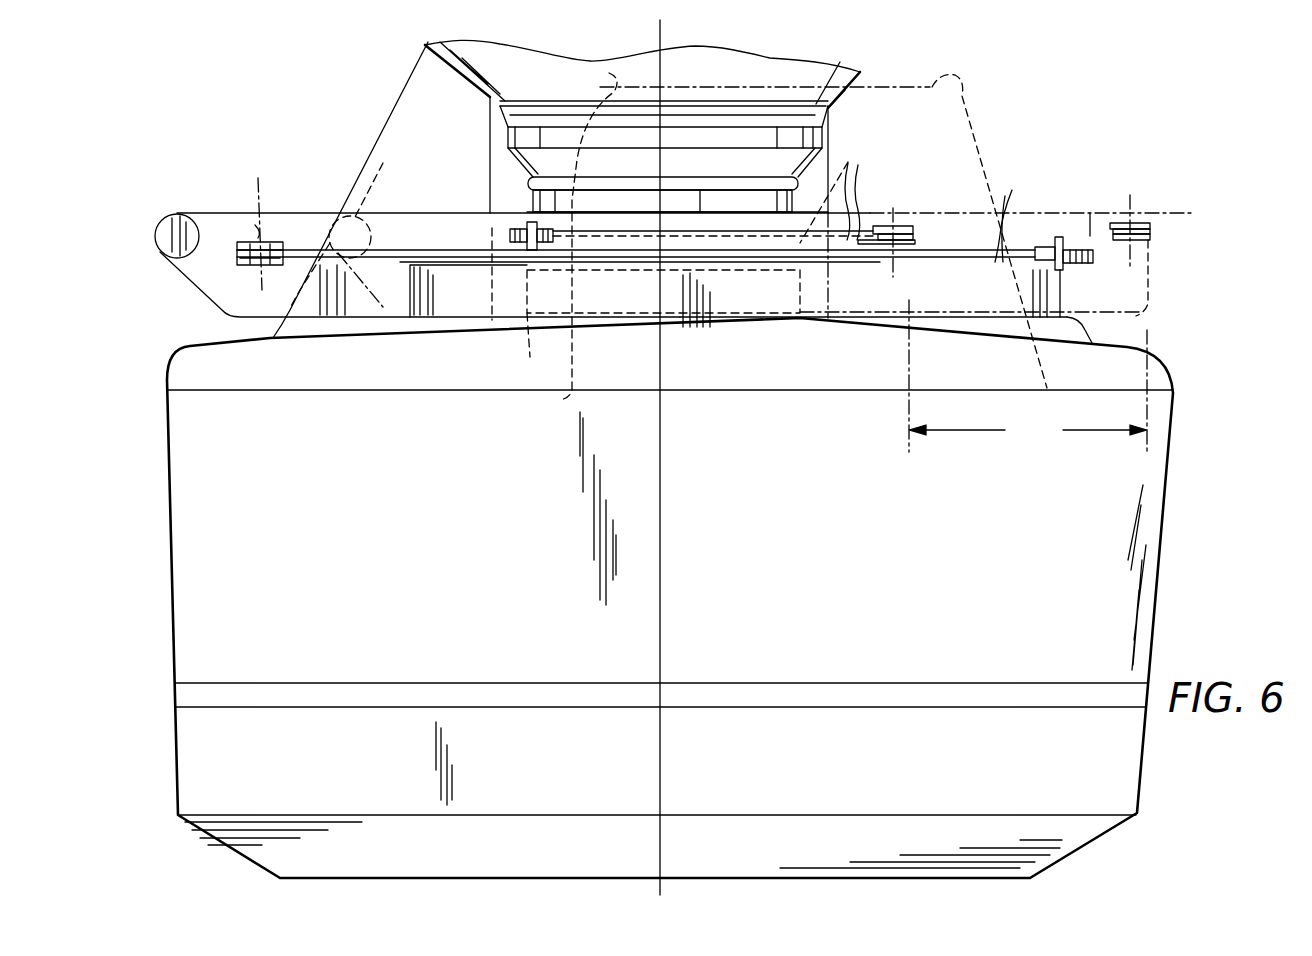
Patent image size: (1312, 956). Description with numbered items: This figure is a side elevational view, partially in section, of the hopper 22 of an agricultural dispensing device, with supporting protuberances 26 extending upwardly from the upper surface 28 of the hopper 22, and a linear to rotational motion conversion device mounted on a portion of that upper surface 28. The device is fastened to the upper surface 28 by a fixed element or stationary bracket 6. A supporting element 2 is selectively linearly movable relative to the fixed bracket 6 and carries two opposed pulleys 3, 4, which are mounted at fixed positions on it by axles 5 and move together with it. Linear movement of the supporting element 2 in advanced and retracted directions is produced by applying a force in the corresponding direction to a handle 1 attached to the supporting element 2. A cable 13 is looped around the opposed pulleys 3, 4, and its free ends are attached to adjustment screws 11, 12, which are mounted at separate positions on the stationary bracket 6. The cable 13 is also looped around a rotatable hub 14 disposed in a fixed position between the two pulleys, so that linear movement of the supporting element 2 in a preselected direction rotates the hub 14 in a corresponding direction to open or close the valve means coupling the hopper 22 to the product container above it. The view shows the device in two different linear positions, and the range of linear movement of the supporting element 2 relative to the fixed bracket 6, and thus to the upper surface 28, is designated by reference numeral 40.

The handle 1 is at (180, 213).
The supporting element 2 is at (222, 213).
The pulley 3 is at (277, 240).
The pulley 4 is at (897, 228).
The axle 5 is at (1138, 215).
The fixed bracket 6 is at (410, 296).
The adjustment screw 11 is at (512, 228).
The adjustment screw 12 is at (1090, 213).
The cable 13 is at (937, 200).
The rotatable hub 14 is at (528, 350).
The hopper 22 is at (1128, 580).
The supporting protuberance 26 is at (390, 132).
The upper surface 28 is at (1130, 346).
The range of linear movement 40 is at (1028, 376).